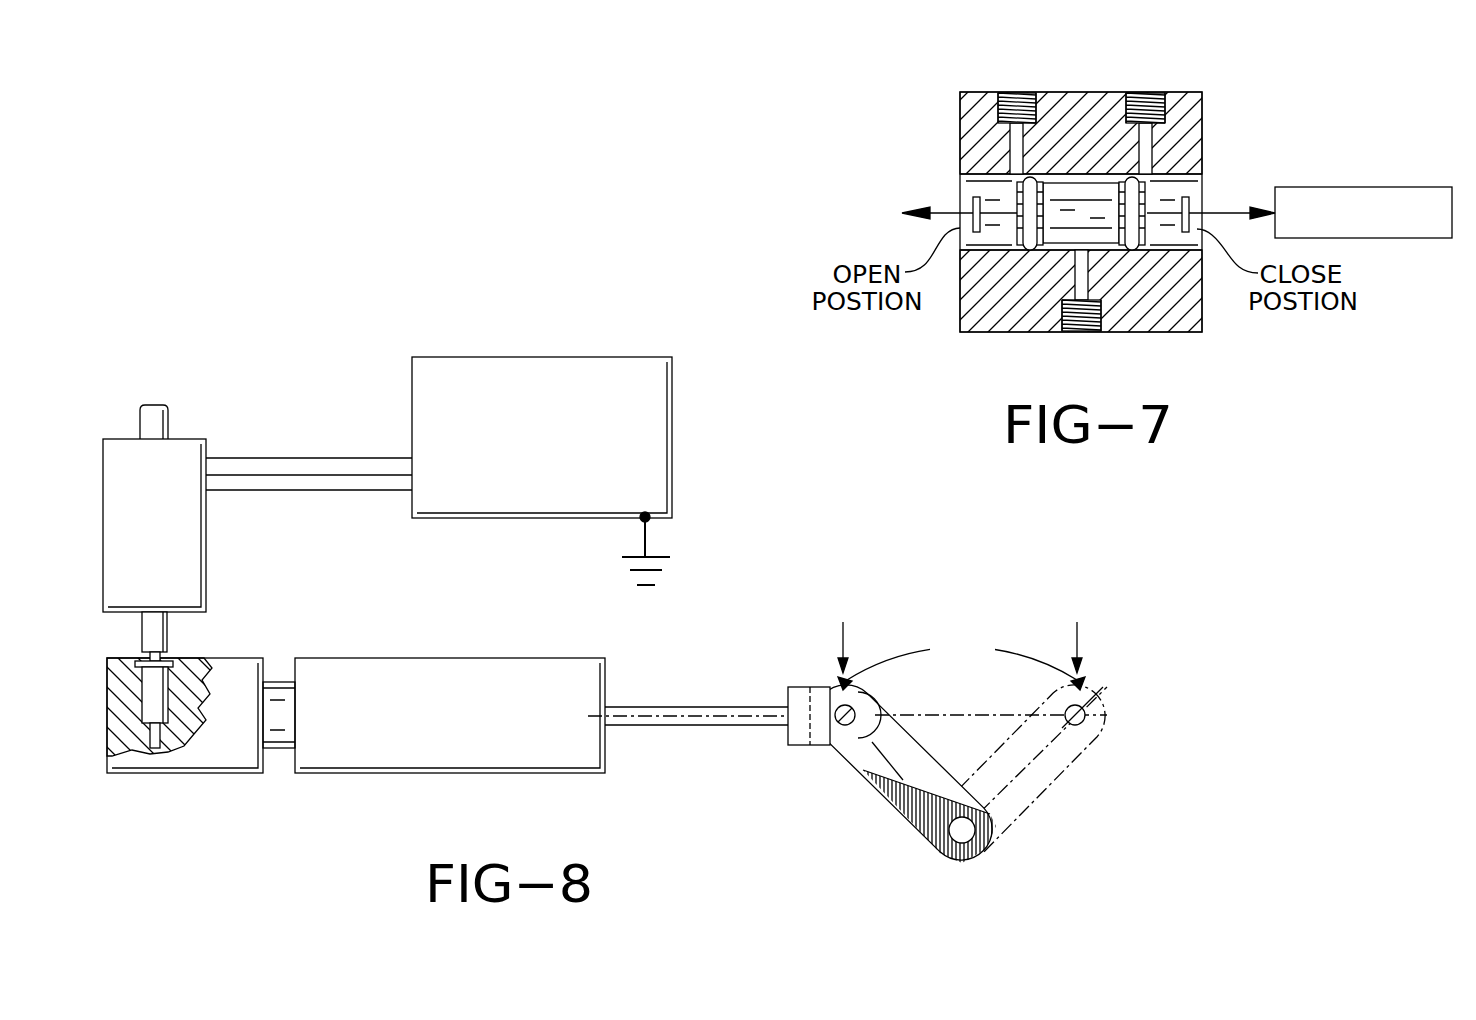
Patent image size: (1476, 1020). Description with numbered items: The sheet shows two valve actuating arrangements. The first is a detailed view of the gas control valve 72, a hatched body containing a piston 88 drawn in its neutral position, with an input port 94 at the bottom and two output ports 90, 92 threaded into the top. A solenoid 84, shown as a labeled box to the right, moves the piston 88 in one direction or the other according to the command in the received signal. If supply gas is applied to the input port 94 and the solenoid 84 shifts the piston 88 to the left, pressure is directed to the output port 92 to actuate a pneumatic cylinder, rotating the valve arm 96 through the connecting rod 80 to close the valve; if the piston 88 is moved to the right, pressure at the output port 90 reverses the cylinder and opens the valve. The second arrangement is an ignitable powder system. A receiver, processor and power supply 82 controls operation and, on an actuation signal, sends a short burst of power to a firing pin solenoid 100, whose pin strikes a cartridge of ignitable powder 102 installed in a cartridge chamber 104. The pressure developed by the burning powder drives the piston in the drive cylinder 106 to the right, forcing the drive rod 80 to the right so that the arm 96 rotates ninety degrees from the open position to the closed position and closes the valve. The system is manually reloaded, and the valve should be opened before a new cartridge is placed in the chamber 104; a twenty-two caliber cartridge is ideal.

In FIG. 7, the gas control valve 72 is at (972, 121).
In FIG. 8, the connecting rod 80 is at (803, 732).
In FIG. 8, the receiver, processor and power supply 82 is at (670, 402).
In FIG. 7, the solenoid 84 is at (1350, 187).
In FIG. 7, the piston 88 is at (1097, 223).
In FIG. 7, the output port 90 is at (1017, 91).
In FIG. 7, the output port 92 is at (1146, 91).
In FIG. 7, the input port 94 is at (1080, 333).
In FIG. 8, the valve arm 96 is at (940, 852).
In FIG. 8, the firing pin solenoid 100 is at (190, 439).
In FIG. 8, the cartridge of ignitable powder 102 is at (150, 687).
In FIG. 8, the cartridge chamber 104 is at (218, 746).
In FIG. 8, the drive cylinder 106 is at (528, 658).